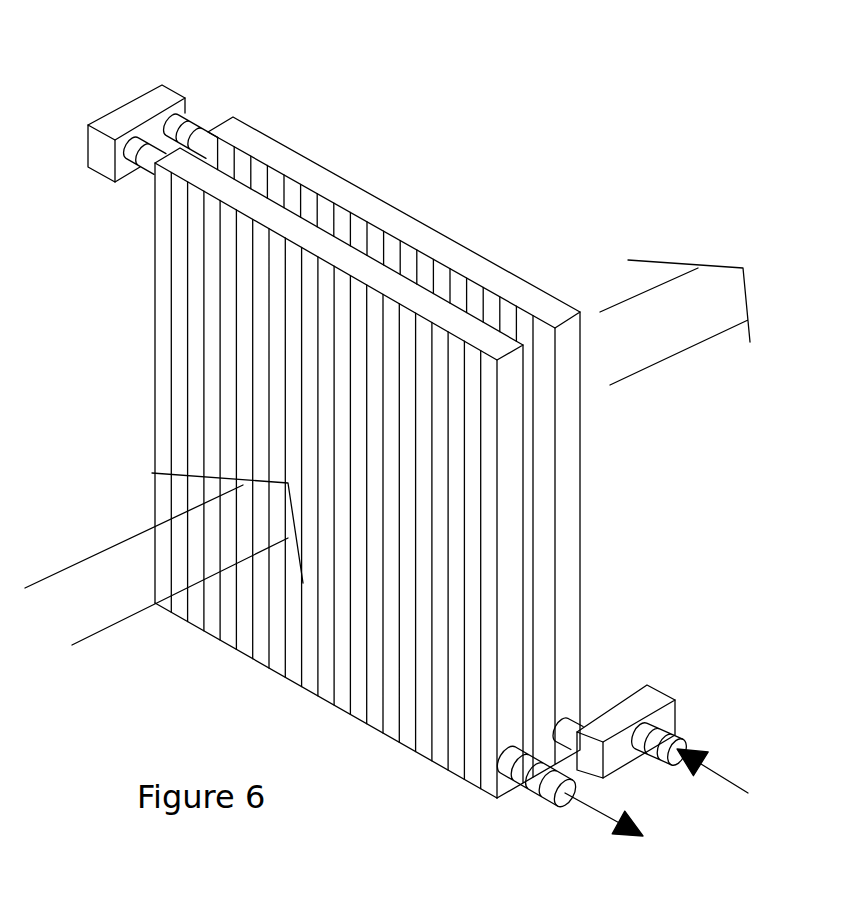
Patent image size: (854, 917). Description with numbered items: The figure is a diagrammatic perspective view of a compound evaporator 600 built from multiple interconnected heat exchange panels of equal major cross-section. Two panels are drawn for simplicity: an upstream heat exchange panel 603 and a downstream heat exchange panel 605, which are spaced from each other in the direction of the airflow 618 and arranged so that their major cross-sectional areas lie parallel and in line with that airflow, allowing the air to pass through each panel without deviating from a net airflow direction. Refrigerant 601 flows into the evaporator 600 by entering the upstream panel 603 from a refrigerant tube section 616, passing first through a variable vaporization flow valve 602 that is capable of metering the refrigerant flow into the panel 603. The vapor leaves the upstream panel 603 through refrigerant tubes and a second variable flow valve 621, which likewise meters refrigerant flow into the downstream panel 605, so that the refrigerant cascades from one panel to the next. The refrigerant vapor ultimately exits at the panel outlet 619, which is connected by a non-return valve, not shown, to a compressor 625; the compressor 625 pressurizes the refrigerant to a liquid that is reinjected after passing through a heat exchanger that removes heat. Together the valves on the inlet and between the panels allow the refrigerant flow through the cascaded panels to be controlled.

The evaporator 600 is at (412, 428).
The refrigerant 601 is at (737, 782).
The variable vaporization flow valve 602 is at (660, 685).
The heat exchange panel 603 is at (567, 630).
The heat exchange panel 605 is at (237, 643).
The refrigerant tube section 616 is at (678, 738).
The airflow 618 is at (387, 452).
The upstream panel outlet 619 is at (520, 790).
The second variable flow valve 621 is at (185, 105).
The compressor 625 is at (624, 827).